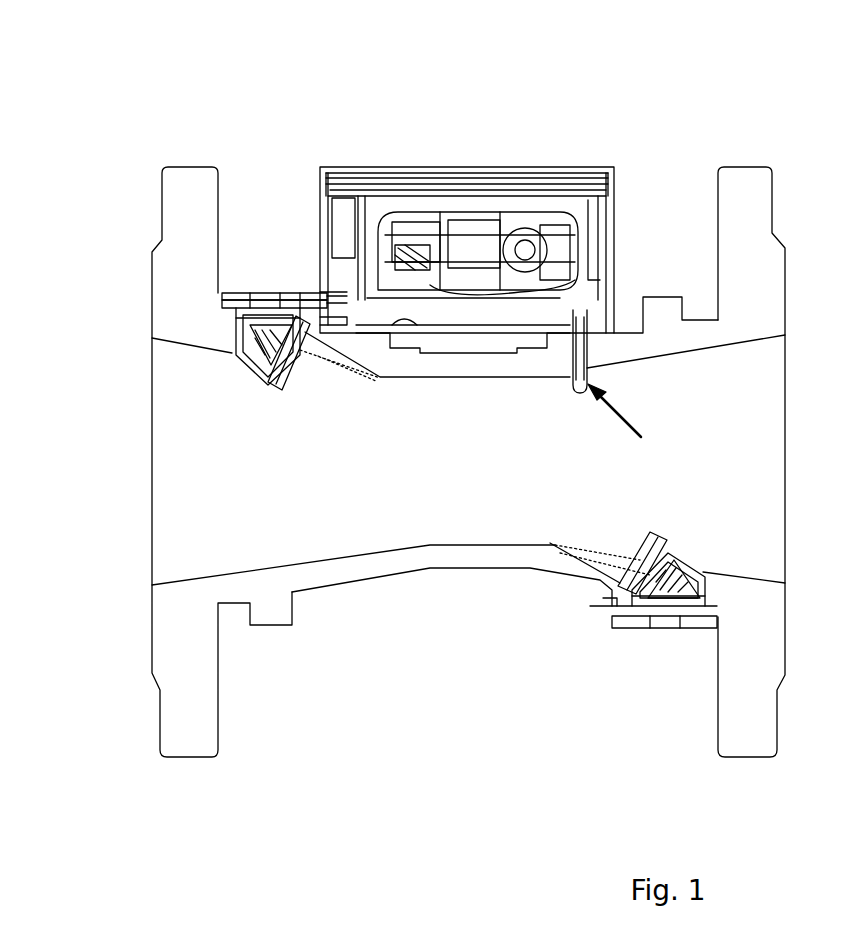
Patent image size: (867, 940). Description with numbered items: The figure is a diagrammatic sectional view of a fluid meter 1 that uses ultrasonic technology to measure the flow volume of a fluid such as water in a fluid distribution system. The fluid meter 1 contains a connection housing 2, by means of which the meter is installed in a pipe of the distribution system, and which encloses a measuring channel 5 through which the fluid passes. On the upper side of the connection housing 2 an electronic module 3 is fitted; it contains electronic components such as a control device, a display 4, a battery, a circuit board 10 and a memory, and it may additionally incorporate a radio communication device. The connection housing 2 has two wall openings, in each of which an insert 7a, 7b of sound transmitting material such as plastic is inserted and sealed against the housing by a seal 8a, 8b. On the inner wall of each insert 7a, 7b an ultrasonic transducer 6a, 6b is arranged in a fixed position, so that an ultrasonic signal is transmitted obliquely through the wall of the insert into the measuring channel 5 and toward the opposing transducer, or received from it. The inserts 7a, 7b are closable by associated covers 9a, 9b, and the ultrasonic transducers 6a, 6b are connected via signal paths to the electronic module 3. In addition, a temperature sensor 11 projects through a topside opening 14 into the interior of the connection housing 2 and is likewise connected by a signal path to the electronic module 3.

The fluid meter 1 is at (450, 43).
The connection housing 2 is at (175, 271).
The electronic module 3 is at (355, 185).
The display 4 is at (520, 167).
The measuring channel 5 is at (467, 462).
The ultrasonic transducer 6a is at (262, 355).
The ultrasonic transducer 6b is at (665, 585).
The insert 7a is at (265, 383).
The insert 7b is at (680, 553).
The seal 8a is at (238, 330).
The seal 8b is at (713, 593).
The cover 9a is at (275, 297).
The cover 9b is at (657, 630).
The circuit board 10 is at (572, 262).
The temperature sensor 11 is at (586, 352).
The topside opening 14 is at (631, 419).